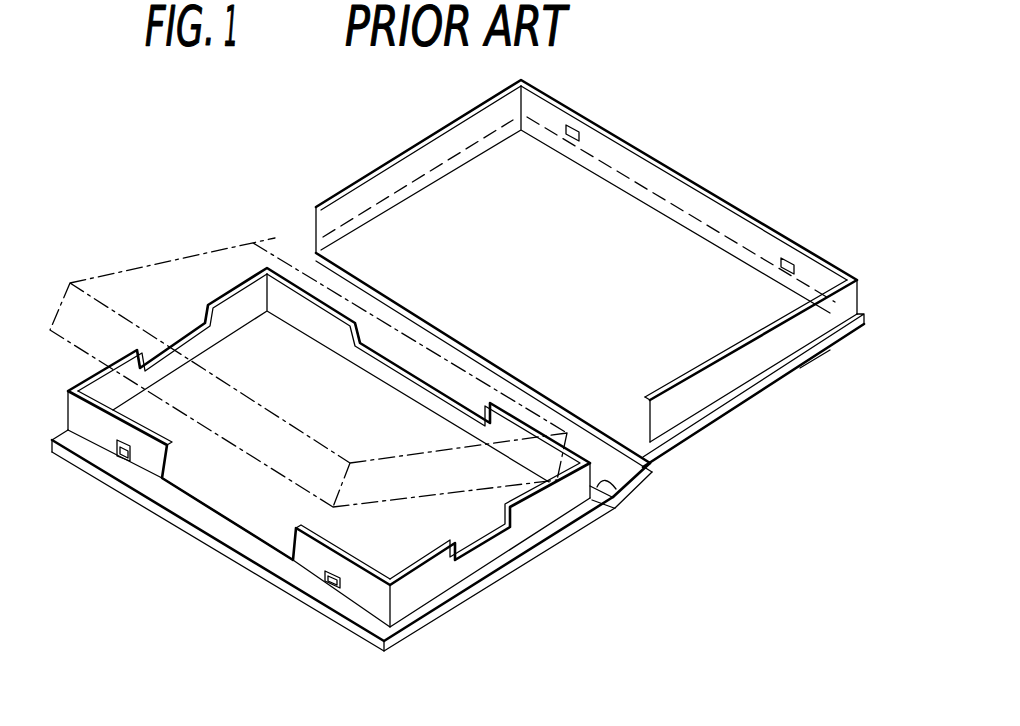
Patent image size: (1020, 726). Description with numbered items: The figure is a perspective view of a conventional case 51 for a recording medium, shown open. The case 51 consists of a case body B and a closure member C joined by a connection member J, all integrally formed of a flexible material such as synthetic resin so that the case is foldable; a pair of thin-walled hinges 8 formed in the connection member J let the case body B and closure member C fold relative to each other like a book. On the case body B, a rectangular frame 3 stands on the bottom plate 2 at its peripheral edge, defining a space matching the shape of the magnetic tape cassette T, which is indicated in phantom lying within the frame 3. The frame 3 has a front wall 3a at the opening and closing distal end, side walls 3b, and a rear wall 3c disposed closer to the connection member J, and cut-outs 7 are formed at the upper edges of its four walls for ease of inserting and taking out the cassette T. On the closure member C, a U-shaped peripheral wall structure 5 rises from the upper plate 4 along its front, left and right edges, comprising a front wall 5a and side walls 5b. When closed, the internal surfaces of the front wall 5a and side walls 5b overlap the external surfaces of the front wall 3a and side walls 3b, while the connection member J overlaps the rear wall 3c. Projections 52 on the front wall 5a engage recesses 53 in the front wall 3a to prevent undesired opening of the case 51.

The case 51 is at (329, 191).
The peripheral wall structure 5 is at (697, 184).
The front wall 5a is at (644, 154).
The side walls 5b is at (404, 151).
The upper plate 4 is at (697, 340).
The projections 52 is at (573, 137).
The thin-walled hinges 8 is at (590, 423).
The bottom plate 2 is at (230, 338).
The frame 3 is at (150, 452).
The front wall 3a is at (202, 513).
The side walls 3b is at (122, 348).
The rear wall 3c is at (245, 362).
The cut-outs 7 is at (165, 314).
The recesses 53 is at (120, 462).
The magnetic tape cassette T is at (62, 312).
The connection member J is at (467, 394).
The case body B is at (476, 596).
The closure member C is at (810, 367).